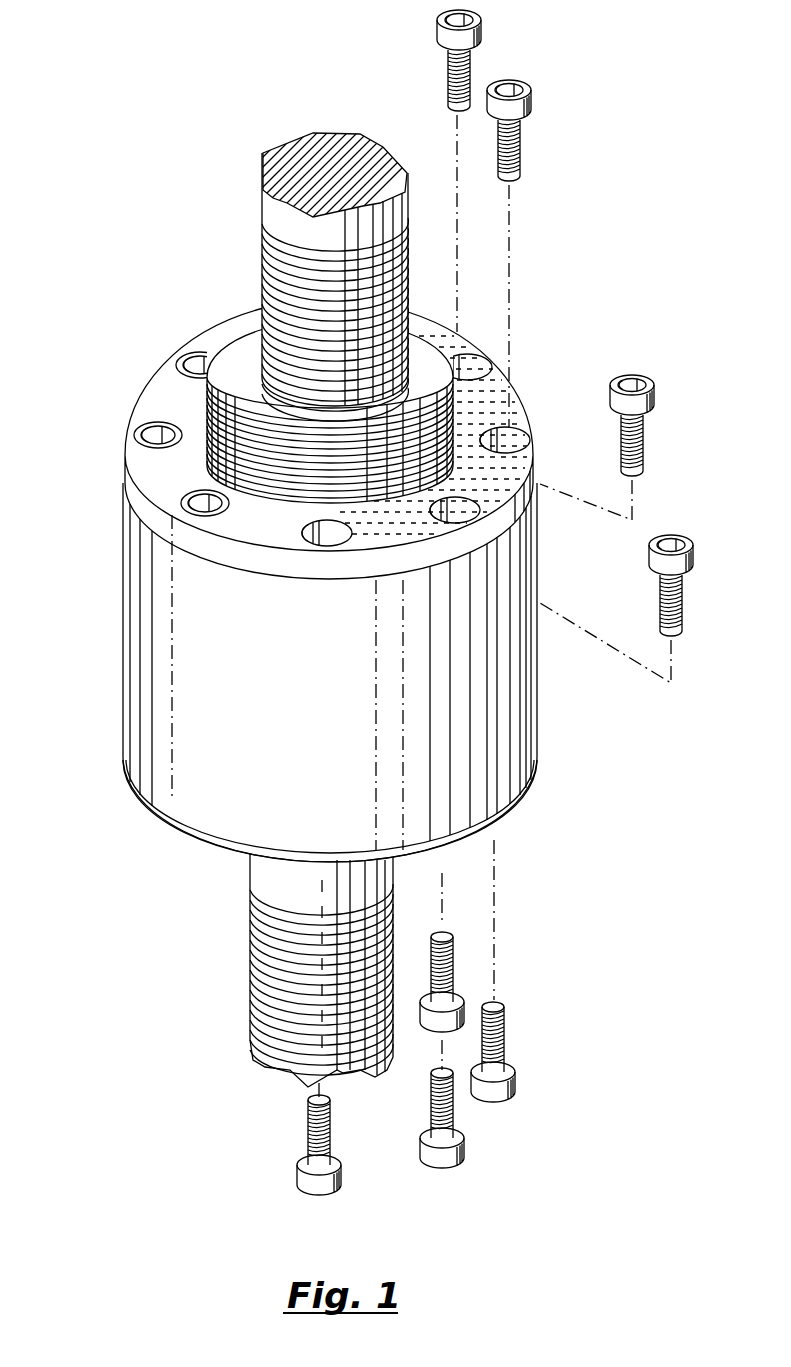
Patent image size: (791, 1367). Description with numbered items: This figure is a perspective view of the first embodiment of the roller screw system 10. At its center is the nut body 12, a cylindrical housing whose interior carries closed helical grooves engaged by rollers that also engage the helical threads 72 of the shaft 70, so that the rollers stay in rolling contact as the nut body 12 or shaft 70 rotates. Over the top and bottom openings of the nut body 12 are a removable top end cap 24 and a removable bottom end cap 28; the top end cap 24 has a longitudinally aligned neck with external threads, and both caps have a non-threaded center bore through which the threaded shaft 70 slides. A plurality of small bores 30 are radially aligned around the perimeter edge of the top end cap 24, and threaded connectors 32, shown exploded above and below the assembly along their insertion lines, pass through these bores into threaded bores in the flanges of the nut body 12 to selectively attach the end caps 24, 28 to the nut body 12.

The roller screw system 10 is at (165, 268).
The nut body 12 is at (128, 603).
The top end cap 24 is at (165, 366).
The bottom end cap 28 is at (190, 856).
The small bores 30 is at (513, 436).
The threaded connectors 32 is at (480, 42).
The shaft 70 is at (260, 180).
The helical threads 72 is at (287, 247).